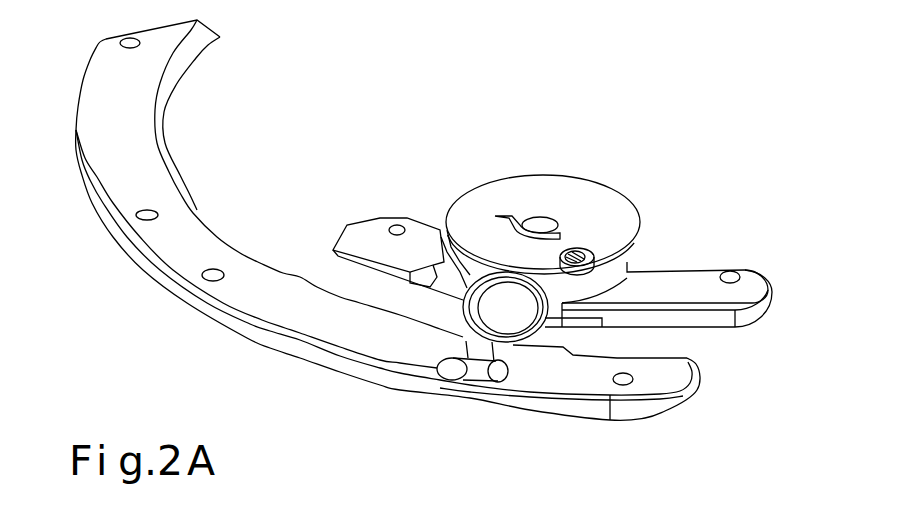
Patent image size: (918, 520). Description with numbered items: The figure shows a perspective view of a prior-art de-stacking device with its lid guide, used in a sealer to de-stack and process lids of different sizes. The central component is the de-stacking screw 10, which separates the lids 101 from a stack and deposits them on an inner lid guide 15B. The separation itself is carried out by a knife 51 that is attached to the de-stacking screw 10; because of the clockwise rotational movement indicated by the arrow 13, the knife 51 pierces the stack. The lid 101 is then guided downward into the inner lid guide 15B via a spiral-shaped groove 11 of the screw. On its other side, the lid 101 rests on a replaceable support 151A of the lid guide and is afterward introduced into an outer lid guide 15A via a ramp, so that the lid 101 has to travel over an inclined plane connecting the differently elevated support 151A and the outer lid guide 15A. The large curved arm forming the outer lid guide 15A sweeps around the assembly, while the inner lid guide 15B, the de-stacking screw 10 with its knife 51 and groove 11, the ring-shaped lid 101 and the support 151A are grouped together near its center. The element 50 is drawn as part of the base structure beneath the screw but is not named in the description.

The outer lid guide 15A is at (148, 172).
The inner lid guide 15B is at (398, 243).
The de-stacking screw 10 is at (488, 200).
The arrow 13 is at (517, 226).
The knife 51 is at (584, 252).
The spiral-shaped groove 11 is at (630, 258).
The base 50 is at (560, 277).
The lid 101 is at (510, 316).
The replaceable support 151A is at (480, 370).